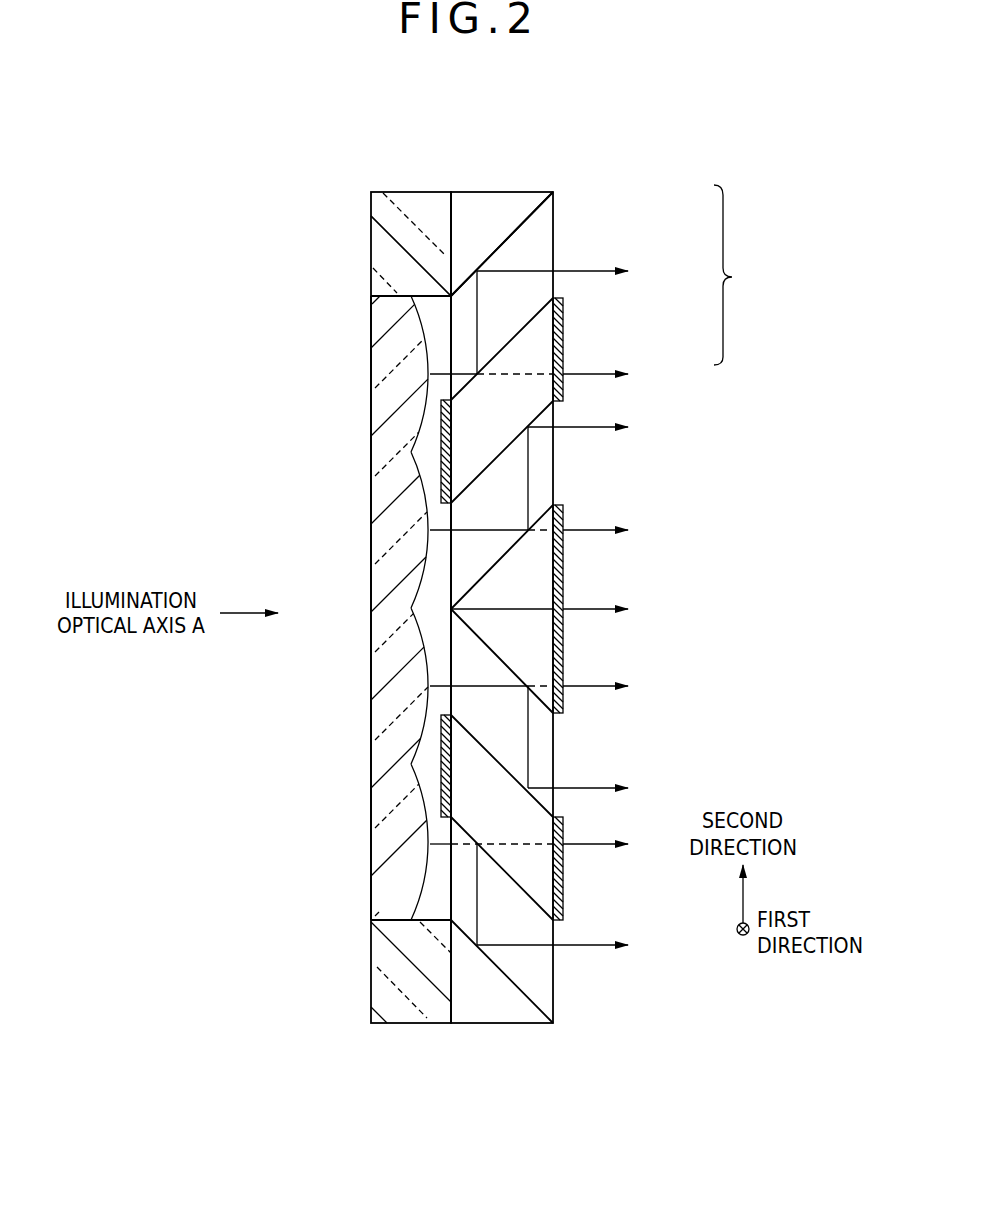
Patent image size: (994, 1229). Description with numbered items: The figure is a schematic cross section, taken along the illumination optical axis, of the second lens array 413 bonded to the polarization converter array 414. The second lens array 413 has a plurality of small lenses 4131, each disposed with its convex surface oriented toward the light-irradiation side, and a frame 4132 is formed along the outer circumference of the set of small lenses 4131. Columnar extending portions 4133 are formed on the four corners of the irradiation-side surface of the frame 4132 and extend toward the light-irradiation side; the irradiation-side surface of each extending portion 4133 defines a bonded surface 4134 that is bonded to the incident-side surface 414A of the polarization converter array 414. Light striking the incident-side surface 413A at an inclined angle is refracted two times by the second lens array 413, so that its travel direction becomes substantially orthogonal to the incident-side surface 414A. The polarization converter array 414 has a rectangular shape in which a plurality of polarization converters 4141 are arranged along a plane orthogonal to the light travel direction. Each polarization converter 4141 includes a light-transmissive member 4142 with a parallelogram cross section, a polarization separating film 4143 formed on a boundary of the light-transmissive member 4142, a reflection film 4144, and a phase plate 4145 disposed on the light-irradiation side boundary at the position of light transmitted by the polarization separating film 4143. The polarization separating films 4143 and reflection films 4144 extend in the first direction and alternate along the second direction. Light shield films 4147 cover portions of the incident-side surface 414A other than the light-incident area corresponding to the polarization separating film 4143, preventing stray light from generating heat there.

The second lens array 413 is at (397, 190).
The incident-side surface 413A is at (372, 890).
The small lenses 4131 is at (392, 533).
The frame 4132 is at (372, 245).
The extending portions 4133 is at (425, 208).
The bonded surface 4134 is at (463, 208).
The polarization converter array 414 is at (522, 190).
The incident-side surface 414A is at (450, 873).
The polarization converter 4141 is at (542, 743).
The light-transmissive member 4142 is at (553, 252).
The polarization separating film 4143 is at (553, 280).
The reflection film 4144 is at (553, 225).
The phase plate 4145 is at (563, 335).
The light shield films 4147 is at (440, 735).